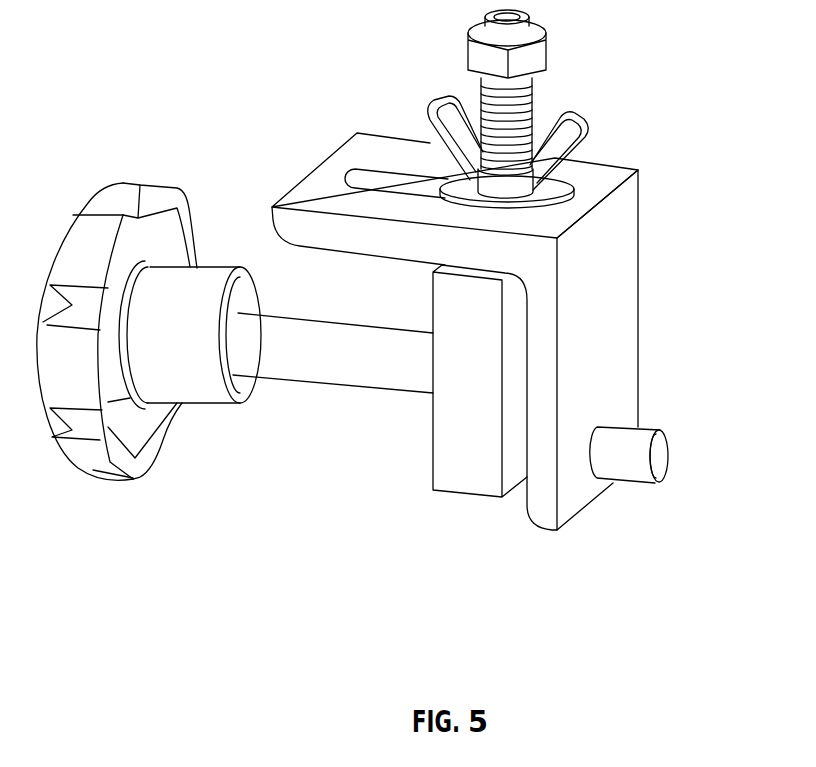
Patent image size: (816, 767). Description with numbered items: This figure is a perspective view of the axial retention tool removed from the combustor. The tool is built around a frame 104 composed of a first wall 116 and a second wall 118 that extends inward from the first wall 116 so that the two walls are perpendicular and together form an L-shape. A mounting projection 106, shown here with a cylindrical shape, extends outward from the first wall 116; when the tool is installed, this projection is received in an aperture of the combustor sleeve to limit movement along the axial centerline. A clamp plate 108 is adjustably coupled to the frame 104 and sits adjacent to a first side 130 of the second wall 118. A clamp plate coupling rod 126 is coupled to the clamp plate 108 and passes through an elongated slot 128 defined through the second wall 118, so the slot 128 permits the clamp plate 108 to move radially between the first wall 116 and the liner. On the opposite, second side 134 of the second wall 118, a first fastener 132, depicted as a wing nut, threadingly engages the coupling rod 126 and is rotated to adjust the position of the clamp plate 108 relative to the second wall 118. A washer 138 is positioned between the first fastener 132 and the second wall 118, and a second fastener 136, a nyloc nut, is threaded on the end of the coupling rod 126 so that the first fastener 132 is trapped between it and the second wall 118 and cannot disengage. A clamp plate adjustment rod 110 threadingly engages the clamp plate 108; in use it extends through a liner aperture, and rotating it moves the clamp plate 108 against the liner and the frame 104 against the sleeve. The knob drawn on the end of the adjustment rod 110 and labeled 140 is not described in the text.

The frame 104 is at (502, 292).
The mounting projection 106 is at (663, 460).
The clamp plate 108 is at (463, 492).
The clamp plate adjustment rod 110 is at (325, 372).
The first wall 116 is at (617, 342).
The second wall 118 is at (314, 197).
The clamp plate coupling rod 126 is at (535, 107).
The elongated slot 128 is at (385, 179).
The first side 130 is at (388, 258).
The first fastener 132 is at (580, 125).
The second side 134 is at (435, 178).
The second fastener 136 is at (548, 45).
The washer 138 is at (573, 163).
The knob 140 is at (92, 453).